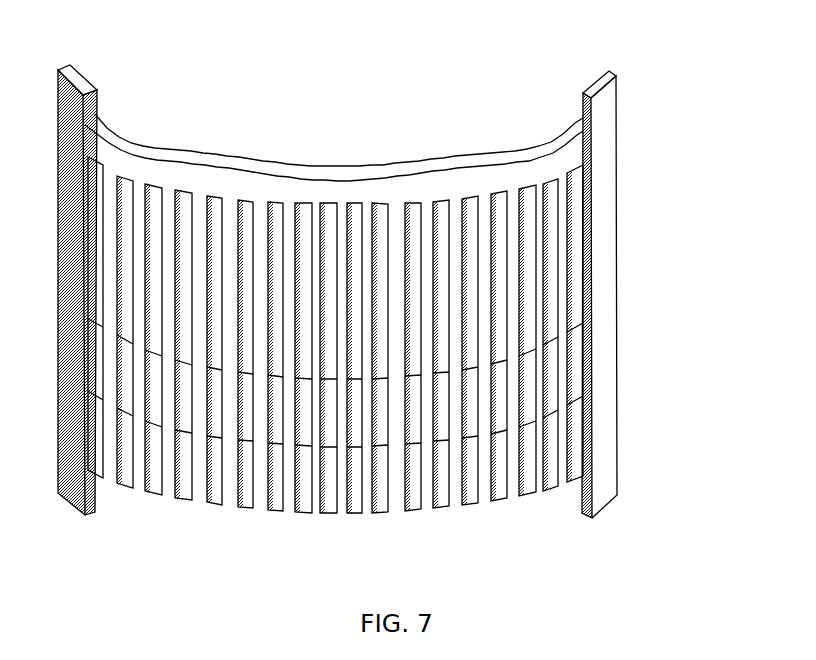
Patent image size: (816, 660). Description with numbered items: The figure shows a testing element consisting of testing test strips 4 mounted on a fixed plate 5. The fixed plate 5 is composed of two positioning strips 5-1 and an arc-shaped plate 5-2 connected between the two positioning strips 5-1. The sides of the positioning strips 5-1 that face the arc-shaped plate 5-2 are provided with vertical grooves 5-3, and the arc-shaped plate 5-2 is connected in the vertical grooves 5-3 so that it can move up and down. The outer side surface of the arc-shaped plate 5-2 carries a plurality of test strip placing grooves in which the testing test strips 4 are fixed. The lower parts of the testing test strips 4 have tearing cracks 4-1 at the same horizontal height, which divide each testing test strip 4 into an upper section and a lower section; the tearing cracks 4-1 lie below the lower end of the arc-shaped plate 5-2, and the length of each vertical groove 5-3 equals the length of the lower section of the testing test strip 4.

The testing test strip 4 is at (414, 369).
The tearing crack 4-1 is at (545, 418).
The fixed plate 5 is at (383, 270).
The positioning strip 5-1 is at (83, 82).
The arc-shaped plate 5-2 is at (422, 165).
The vertical groove 5-3 is at (588, 110).